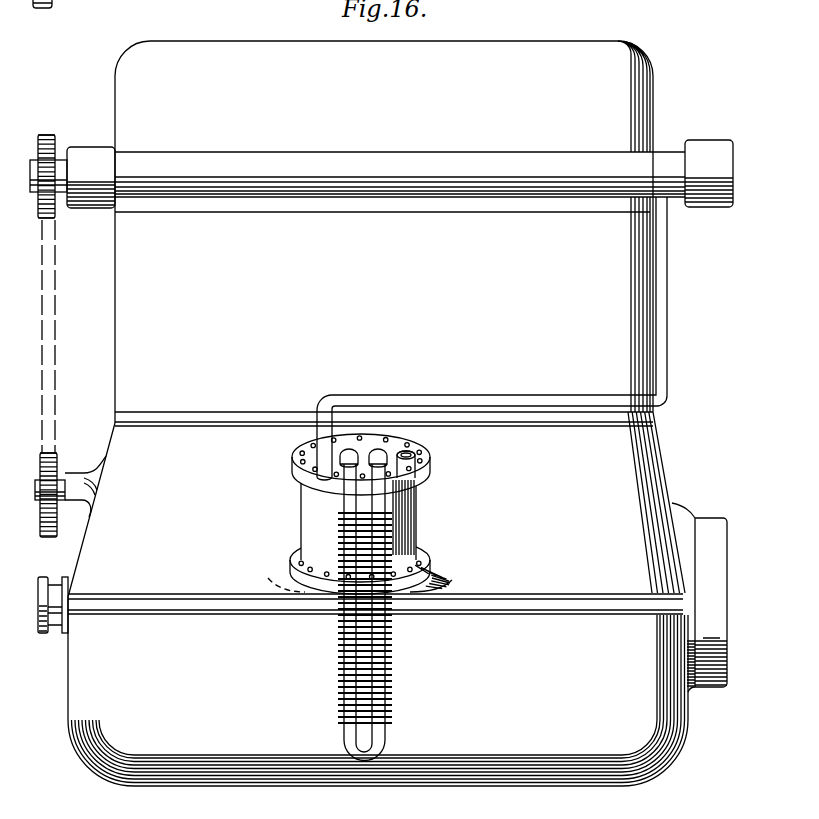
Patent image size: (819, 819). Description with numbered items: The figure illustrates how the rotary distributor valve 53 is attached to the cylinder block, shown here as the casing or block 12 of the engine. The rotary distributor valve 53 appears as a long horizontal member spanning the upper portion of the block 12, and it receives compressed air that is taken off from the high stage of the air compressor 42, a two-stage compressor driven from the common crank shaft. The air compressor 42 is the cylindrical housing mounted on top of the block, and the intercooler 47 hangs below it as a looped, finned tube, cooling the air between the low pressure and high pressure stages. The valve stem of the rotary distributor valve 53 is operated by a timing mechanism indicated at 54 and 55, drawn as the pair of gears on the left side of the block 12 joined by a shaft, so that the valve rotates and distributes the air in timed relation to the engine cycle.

The tank 12 is at (663, 298).
The air compressor 42 is at (425, 518).
The intercooler 47 is at (387, 703).
The rotary distributor valve 53 is at (553, 158).
The timing mechanism 54 is at (47, 497).
The timing mechanism 55 is at (45, 190).